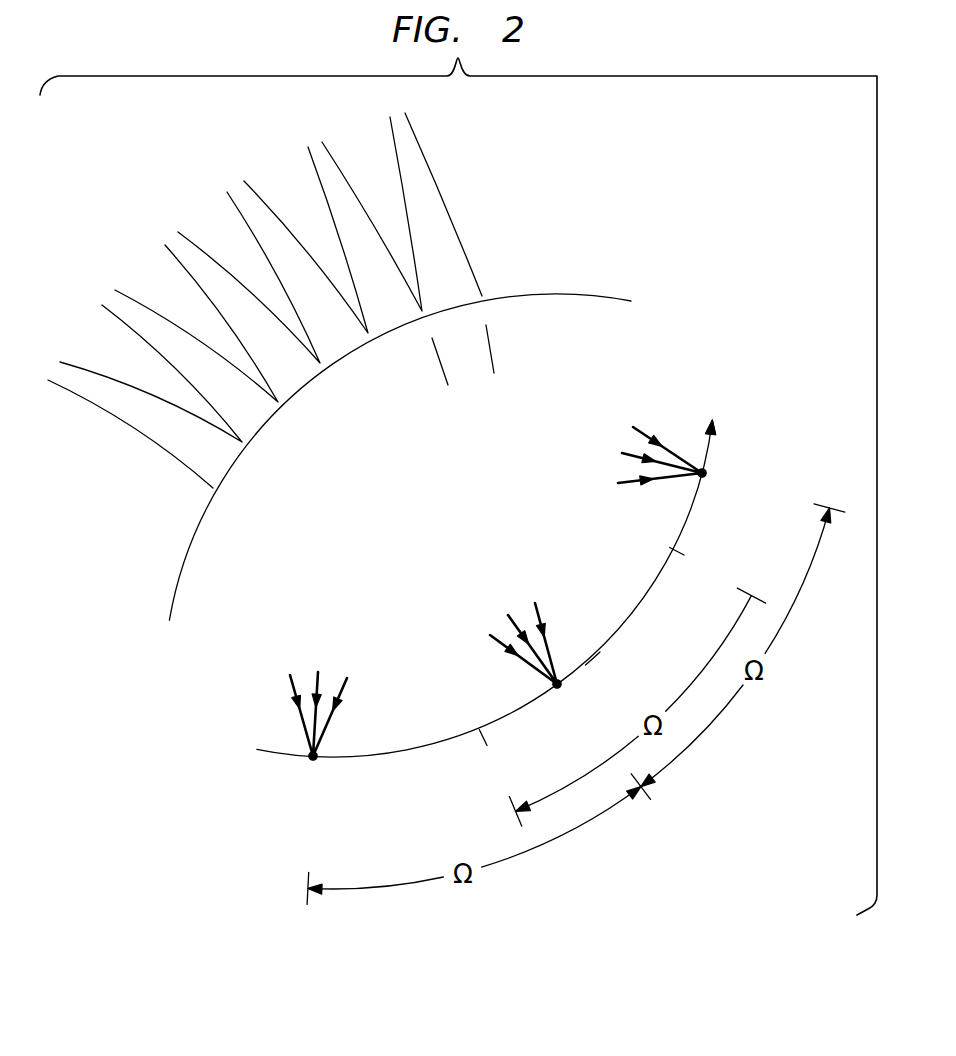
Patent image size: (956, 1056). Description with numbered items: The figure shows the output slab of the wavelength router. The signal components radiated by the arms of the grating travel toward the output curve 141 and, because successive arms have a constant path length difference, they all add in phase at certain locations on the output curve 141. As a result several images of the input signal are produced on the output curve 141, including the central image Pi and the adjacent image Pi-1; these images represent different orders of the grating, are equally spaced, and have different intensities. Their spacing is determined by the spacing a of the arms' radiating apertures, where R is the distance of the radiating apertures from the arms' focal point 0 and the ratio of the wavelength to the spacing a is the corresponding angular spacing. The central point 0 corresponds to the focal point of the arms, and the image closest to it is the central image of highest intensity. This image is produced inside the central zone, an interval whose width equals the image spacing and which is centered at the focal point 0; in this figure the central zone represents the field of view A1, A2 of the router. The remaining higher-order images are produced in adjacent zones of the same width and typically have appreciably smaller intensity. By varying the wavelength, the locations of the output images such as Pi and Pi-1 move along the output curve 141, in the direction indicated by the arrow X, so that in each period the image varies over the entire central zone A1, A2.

The output curve 141 is at (257, 749).
The distance of the radiating apertures from the focal point R is at (552, 681).
The spacing of the arms' radiating apertures a is at (382, 388).
The direction of travel along path X is at (723, 421).
The central image Pi is at (527, 671).
The image of the input signal Pi-1 is at (687, 464).
The boundary of the central zone A1 is at (492, 759).
The boundary of the central zone A2 is at (694, 571).
The focal point 0 is at (600, 676).